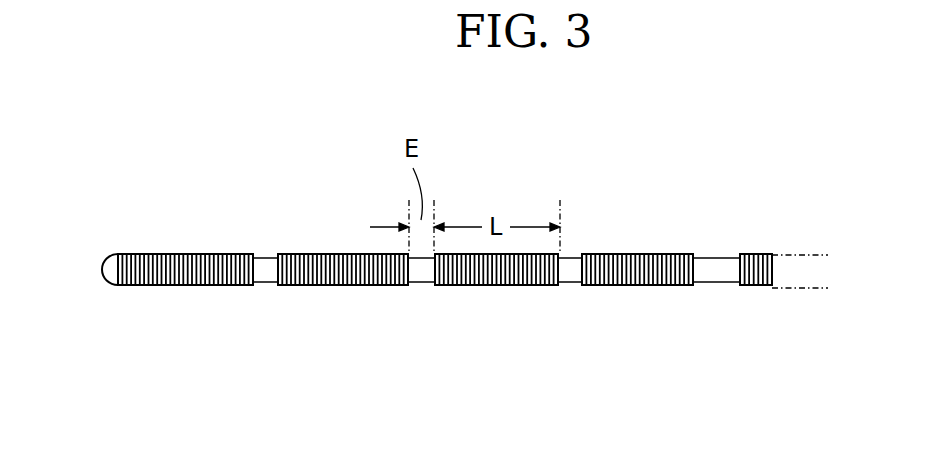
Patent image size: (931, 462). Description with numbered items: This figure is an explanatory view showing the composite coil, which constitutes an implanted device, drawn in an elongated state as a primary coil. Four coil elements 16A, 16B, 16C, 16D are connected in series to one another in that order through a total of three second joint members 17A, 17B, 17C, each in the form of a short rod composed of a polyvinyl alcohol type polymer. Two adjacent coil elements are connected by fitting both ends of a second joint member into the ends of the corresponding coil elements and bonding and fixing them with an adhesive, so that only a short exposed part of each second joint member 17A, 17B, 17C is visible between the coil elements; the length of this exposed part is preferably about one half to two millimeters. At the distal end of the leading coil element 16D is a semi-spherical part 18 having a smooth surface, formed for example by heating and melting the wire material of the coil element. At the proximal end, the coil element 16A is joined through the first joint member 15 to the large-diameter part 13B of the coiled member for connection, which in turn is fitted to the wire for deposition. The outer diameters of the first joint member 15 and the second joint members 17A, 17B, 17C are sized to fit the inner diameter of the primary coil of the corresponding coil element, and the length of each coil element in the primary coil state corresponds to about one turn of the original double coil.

The semi-spherical part 18 is at (104, 257).
The coil element 16D is at (190, 255).
The coil element 16C is at (320, 255).
The coil element 16B is at (500, 287).
The coil element 16A is at (672, 287).
The second joint member 17C is at (262, 284).
The second joint member 17B is at (420, 284).
The second joint member 17A is at (568, 286).
The first joint member 15 is at (717, 257).
The large-diameter part 13B is at (760, 257).